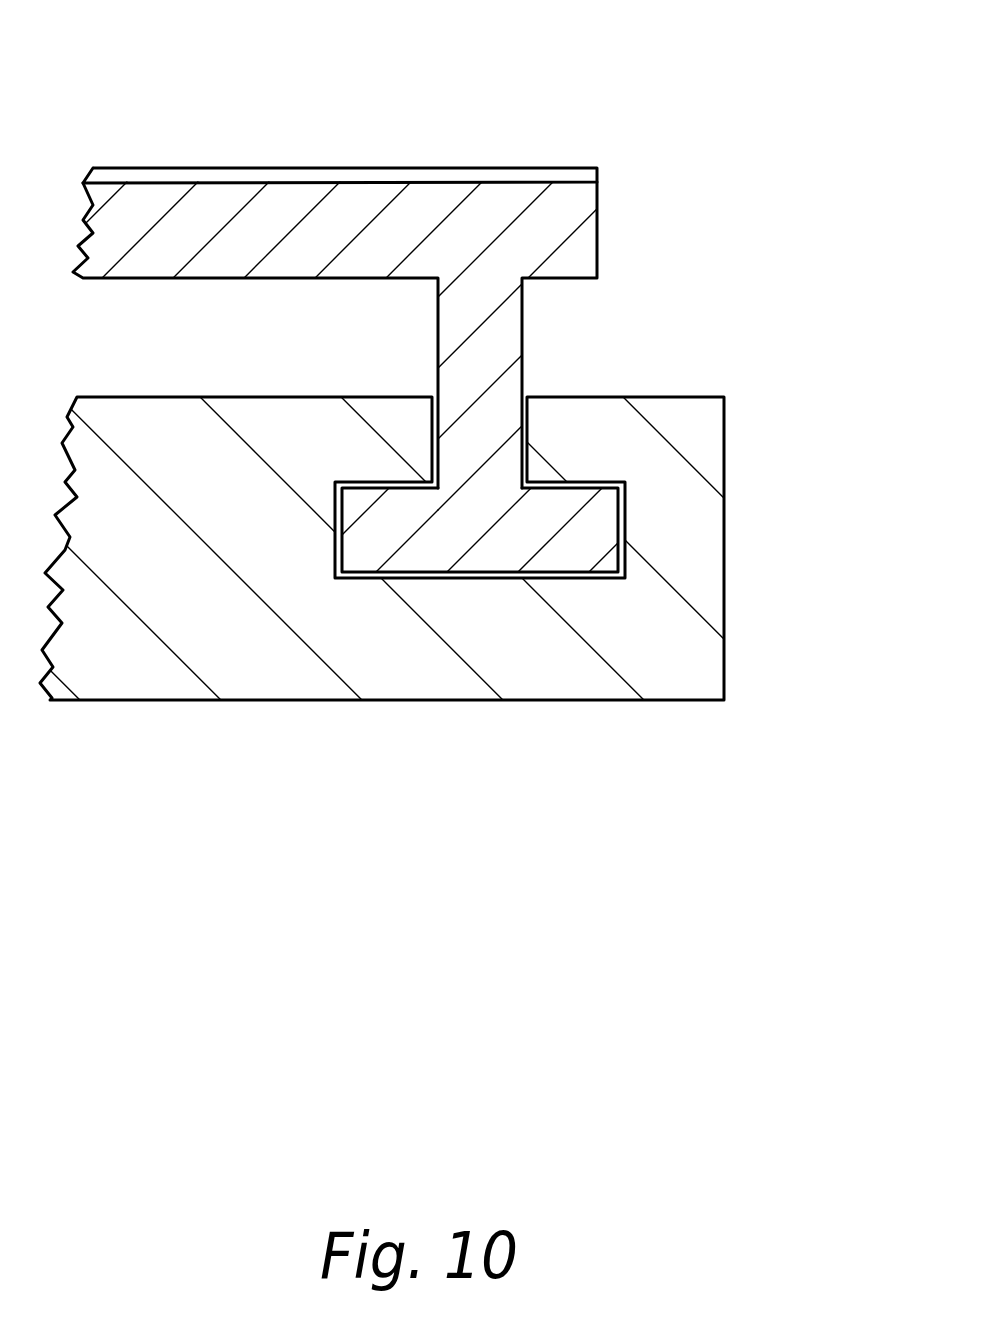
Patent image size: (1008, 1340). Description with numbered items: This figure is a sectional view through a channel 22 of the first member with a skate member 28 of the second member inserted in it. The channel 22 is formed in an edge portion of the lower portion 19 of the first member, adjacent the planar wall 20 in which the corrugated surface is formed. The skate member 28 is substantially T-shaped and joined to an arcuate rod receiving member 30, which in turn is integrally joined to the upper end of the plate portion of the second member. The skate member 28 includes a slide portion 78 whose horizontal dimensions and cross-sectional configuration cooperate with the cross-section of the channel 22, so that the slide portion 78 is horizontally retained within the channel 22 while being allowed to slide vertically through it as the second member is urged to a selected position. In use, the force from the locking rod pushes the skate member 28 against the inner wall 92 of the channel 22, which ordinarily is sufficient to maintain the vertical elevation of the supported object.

The lower portion 19 is at (693, 543).
The planar wall 20 is at (393, 397).
The channel 22 is at (625, 560).
The skate member 28 is at (505, 387).
The arcuate rod receiving member 30 is at (447, 168).
The slide portion 78 is at (566, 550).
The inner wall 92 is at (585, 480).